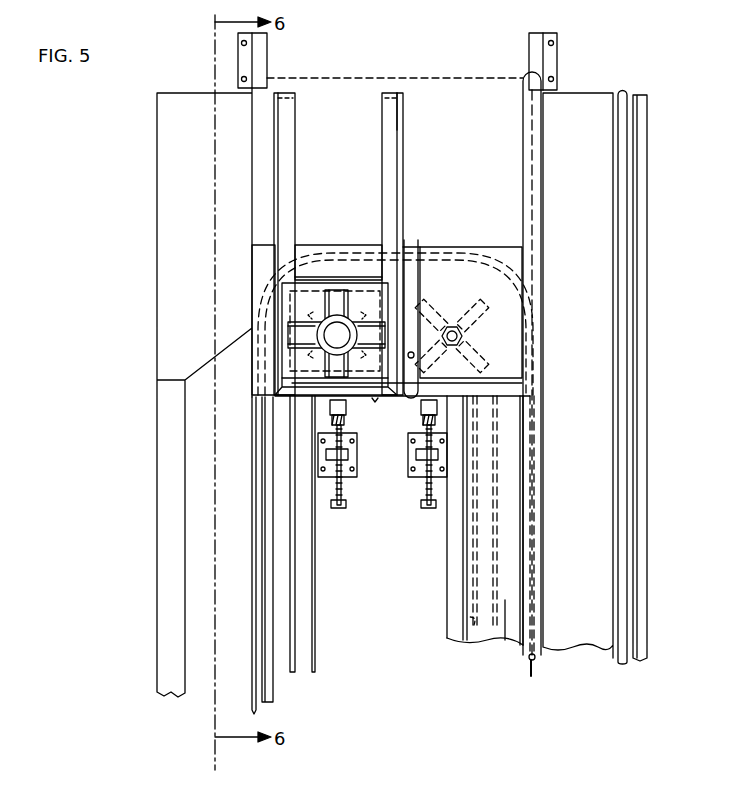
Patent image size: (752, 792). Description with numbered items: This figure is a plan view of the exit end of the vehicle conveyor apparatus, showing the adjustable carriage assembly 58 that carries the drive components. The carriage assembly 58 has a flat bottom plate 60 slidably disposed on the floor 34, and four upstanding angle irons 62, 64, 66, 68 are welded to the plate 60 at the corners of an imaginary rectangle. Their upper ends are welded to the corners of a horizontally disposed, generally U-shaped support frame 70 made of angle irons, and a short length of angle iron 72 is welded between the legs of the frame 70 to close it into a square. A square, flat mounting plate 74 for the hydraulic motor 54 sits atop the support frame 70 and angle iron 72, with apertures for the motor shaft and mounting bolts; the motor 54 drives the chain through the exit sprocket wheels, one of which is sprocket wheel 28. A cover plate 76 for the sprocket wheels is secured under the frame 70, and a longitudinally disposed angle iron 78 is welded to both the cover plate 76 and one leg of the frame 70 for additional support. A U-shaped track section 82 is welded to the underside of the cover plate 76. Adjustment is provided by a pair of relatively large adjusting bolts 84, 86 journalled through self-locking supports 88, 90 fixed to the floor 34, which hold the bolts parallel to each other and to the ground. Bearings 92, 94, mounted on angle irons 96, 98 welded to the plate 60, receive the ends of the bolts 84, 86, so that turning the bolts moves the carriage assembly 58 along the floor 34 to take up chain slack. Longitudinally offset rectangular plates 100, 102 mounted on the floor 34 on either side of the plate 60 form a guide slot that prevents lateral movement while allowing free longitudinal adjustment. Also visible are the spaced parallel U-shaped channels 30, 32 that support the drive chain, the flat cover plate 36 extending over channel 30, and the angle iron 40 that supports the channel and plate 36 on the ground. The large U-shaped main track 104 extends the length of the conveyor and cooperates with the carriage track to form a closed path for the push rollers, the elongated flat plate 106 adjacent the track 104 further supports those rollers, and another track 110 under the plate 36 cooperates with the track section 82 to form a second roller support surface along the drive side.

The sprocket wheel 28 is at (528, 333).
The channel 30 is at (478, 632).
The channel 32 is at (312, 583).
The floor 34 is at (389, 641).
The cover plate 36 is at (510, 628).
The angle iron 40 is at (445, 580).
The hydraulic motor 54 is at (300, 330).
The carriage assembly 58 is at (518, 240).
The bottom plate 60 is at (492, 171).
The angle iron 62 is at (250, 388).
The angle iron 64 is at (390, 395).
The angle iron 66 is at (276, 108).
The angle iron 68 is at (404, 100).
The support frame 70 is at (400, 140).
The angle iron 72 is at (362, 275).
The mounting plate 74 is at (282, 290).
The cover plate 76 is at (462, 270).
The angle iron 78 is at (411, 255).
The track section 82 is at (541, 257).
The adjusting bolt 84 is at (343, 498).
The adjusting bolt 86 is at (433, 498).
The self-locking support 88 is at (326, 455).
The self-locking support 90 is at (408, 462).
The bearing 92 is at (333, 420).
The bearing 94 is at (437, 422).
The angle iron 96 is at (335, 408).
The angle iron 98 is at (440, 406).
The rectangular plate 100 is at (262, 40).
The rectangular plate 102 is at (557, 42).
The main track 104 is at (252, 603).
The flat plate 106 is at (272, 635).
The track 110 is at (530, 438).